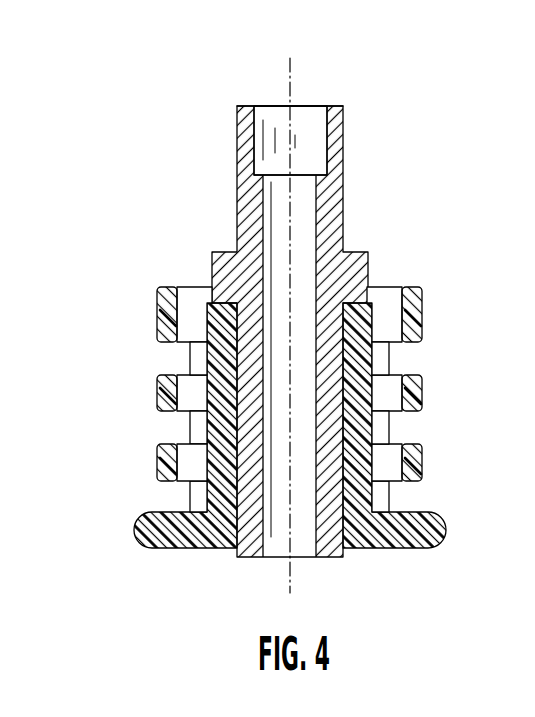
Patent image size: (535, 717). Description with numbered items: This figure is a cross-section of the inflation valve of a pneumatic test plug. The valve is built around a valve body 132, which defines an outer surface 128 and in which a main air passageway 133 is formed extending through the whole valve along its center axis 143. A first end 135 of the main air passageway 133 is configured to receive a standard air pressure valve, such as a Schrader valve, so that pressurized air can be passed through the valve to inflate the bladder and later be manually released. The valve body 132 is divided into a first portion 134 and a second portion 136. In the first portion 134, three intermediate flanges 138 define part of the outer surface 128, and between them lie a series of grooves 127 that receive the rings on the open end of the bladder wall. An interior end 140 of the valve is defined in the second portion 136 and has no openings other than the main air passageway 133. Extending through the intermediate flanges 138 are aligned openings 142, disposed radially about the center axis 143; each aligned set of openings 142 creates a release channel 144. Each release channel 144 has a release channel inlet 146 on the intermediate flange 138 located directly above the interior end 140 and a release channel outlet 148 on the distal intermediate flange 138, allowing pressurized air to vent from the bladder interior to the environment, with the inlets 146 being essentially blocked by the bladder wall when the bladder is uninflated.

The grooves 127 is at (174, 361).
The outer surface 128 is at (149, 349).
The valve body 132 is at (180, 211).
The main air passageway 133 is at (309, 83).
The first portion 134 is at (408, 103).
The first end 135 is at (336, 107).
The second portion 136 is at (445, 487).
The intermediate flanges 138 is at (158, 406).
The interior end 140 is at (195, 532).
The aligned openings 142 is at (195, 287).
The center axis 143 is at (288, 72).
The release channel 144 is at (188, 470).
The release channel inlet 146 is at (389, 490).
The release channel outlet 148 is at (382, 287).